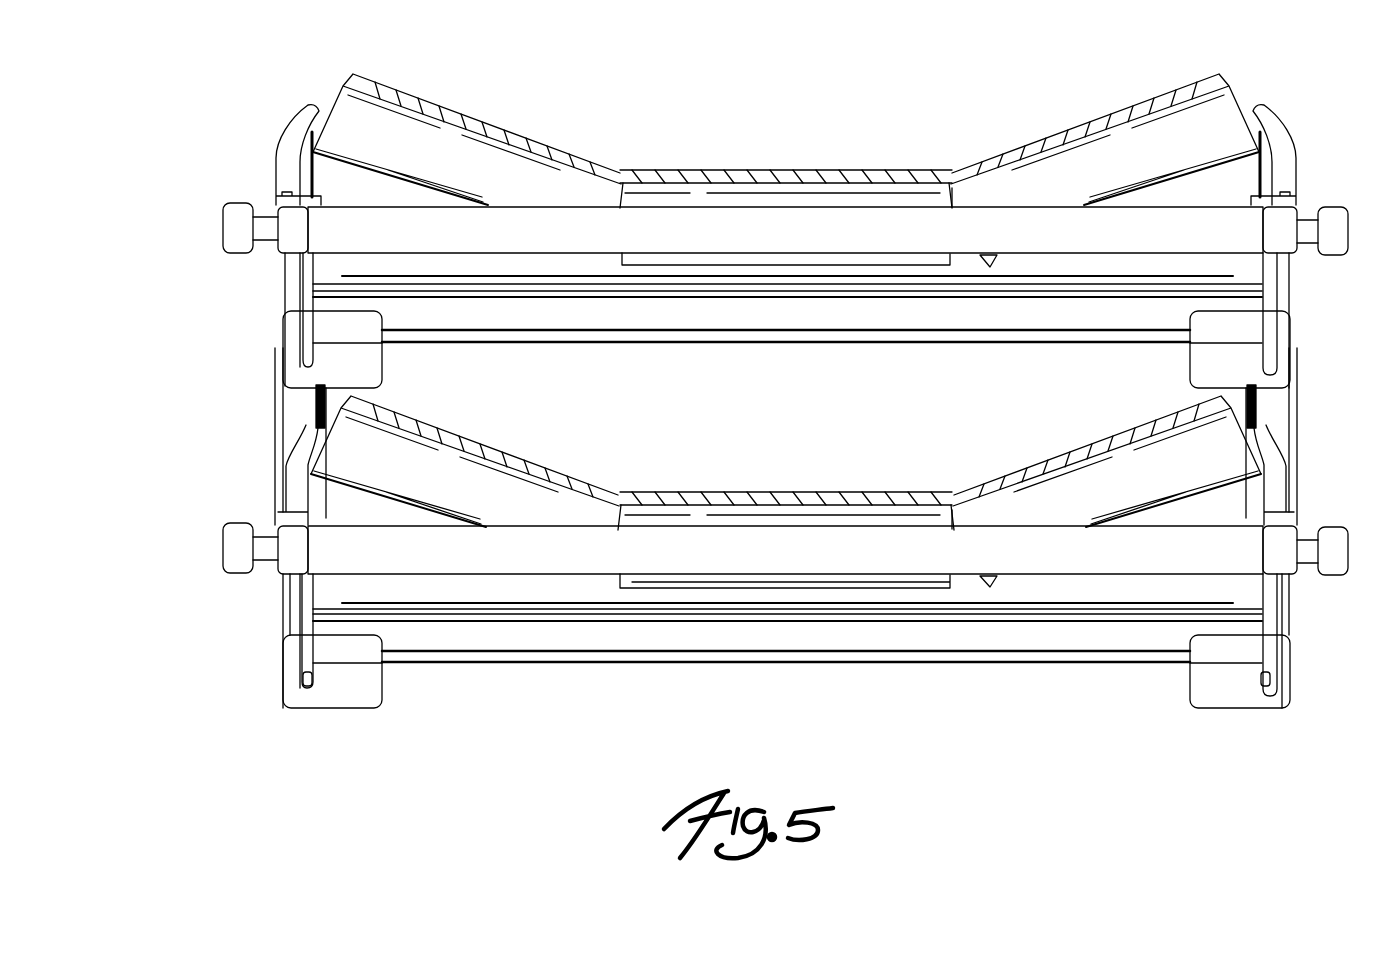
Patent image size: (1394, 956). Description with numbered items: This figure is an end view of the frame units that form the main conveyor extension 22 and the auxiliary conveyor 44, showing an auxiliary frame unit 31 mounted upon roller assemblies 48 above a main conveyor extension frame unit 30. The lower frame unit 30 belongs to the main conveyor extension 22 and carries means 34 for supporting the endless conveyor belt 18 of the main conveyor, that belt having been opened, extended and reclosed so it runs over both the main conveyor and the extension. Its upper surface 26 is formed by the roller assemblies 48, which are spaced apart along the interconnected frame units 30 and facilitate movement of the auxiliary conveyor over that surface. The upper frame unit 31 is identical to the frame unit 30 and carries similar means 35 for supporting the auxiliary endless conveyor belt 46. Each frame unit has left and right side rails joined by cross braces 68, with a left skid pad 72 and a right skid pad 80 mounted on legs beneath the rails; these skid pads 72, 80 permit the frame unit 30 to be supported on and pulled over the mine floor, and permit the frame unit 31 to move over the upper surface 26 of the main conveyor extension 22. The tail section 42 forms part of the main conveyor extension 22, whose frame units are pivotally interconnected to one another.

The endless conveyor belt 18 is at (518, 449).
The main conveyor extension 22 is at (268, 611).
The upper surface 26 is at (285, 376).
The frame unit 30 is at (1290, 615).
The frame unit 31 is at (1267, 283).
The means for supporting an endless conveyor belt 34 is at (1222, 466).
The means for supporting an endless conveyor belt 35 is at (1228, 116).
The tail section 42 is at (307, 104).
The auxiliary conveyor 44 is at (272, 279).
The endless conveyor belt 46 is at (553, 157).
The roller assemblies 48 is at (297, 421).
The cross braces 68 is at (437, 558).
The left skid pad 72 is at (343, 685).
The right skid pad 80 is at (1227, 368).